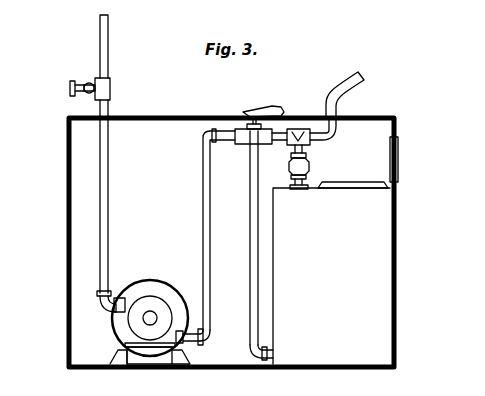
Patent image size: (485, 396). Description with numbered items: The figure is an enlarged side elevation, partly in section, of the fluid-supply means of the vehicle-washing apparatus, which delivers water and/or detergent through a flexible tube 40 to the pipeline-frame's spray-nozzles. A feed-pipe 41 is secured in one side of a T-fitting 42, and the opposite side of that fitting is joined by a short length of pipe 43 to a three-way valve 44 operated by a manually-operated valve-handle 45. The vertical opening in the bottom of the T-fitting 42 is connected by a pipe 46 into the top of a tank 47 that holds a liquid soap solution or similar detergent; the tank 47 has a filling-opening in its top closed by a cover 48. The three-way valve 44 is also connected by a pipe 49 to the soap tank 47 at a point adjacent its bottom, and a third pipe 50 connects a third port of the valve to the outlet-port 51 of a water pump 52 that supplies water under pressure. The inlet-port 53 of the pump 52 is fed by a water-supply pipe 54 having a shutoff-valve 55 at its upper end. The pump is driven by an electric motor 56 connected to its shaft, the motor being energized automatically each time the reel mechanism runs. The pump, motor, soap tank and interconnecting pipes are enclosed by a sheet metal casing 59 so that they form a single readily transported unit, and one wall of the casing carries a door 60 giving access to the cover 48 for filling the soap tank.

The flexible tube 40 is at (353, 72).
The feed-pipe 41 is at (337, 132).
The T-fitting 42 is at (302, 129).
The short length of pipe 43 is at (280, 141).
The three-way valve 44 is at (247, 144).
The valve-handle 45 is at (276, 106).
The pipe 46 is at (308, 152).
The tank 47 is at (345, 264).
The cover 48 is at (343, 182).
The pipe 49 is at (250, 222).
The third pipe 50 is at (203, 196).
The outlet-port 51 is at (180, 320).
The water pump 52 is at (133, 318).
The inlet-port 53 is at (121, 292).
The water-supply pipe 54 is at (109, 32).
The shutoff-valve 55 is at (111, 90).
The electric motor 56 is at (155, 278).
The sheet metal casing 59 is at (397, 262).
The door 60 is at (398, 160).